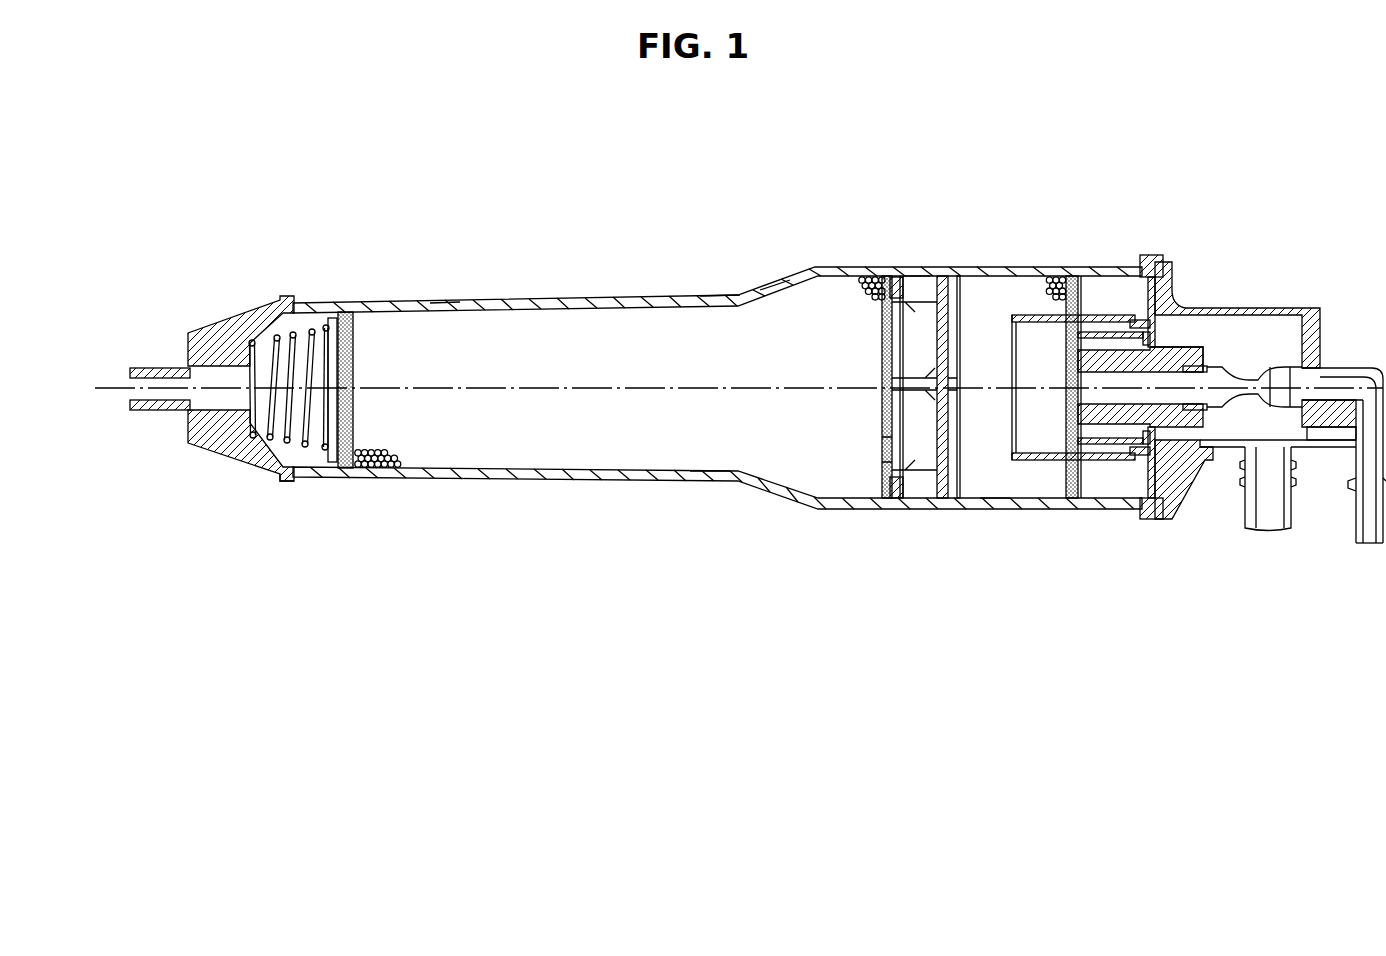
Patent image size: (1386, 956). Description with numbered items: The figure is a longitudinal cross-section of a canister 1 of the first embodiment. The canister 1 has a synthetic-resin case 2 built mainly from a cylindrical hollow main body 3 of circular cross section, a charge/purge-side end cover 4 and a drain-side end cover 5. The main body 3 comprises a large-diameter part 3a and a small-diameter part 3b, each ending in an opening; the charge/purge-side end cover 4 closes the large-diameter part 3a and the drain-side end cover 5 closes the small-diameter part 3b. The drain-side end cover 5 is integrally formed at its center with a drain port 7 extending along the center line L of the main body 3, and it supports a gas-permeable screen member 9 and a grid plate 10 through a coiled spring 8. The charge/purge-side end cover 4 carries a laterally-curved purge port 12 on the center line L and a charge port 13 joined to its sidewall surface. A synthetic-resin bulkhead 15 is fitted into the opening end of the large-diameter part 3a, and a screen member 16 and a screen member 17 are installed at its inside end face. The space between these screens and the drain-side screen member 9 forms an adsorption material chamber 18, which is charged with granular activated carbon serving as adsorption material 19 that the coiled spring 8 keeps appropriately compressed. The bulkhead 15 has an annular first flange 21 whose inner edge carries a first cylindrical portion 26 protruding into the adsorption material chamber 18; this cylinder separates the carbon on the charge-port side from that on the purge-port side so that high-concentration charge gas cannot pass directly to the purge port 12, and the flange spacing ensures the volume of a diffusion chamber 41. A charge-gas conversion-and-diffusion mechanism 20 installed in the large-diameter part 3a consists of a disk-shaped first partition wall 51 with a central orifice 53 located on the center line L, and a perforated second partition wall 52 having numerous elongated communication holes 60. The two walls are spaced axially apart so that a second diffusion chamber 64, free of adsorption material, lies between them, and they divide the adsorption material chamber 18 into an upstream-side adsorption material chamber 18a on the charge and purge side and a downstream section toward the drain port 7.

The canister 1 is at (777, 236).
The case 2 is at (657, 284).
The main body 3 is at (539, 300).
The large-diameter part 3a is at (884, 272).
The small-diameter part 3b is at (443, 302).
The charge/purge-side end cover 4 is at (1270, 308).
The drain-side end cover 5 is at (222, 322).
The drain port 7 is at (155, 368).
The coiled spring 8 is at (272, 469).
The screen member 9 is at (347, 342).
The grid plate 10 is at (331, 318).
The purge port 12 is at (1372, 543).
The charge port 13 is at (1270, 529).
The bulkhead 15 is at (1190, 345).
The screen member 16 is at (1070, 499).
The screen member 17 is at (1050, 357).
The adsorption material chamber 18 is at (708, 472).
The upstream-side adsorption material chamber 18a is at (993, 484).
The adsorption material 19 is at (392, 452).
The charge-gas conversion-and-diffusion mechanism 20 is at (927, 246).
The first flange 21 is at (1085, 484).
The first cylindrical portion 26 is at (1035, 461).
The diffusion chamber 41 is at (1123, 484).
The first partition wall 51 is at (945, 500).
The second partition wall 52 is at (884, 500).
The orifice 53 is at (959, 300).
The communication holes 60 is at (882, 439).
The second diffusion chamber 64 is at (913, 498).
The center line L is at (780, 392).